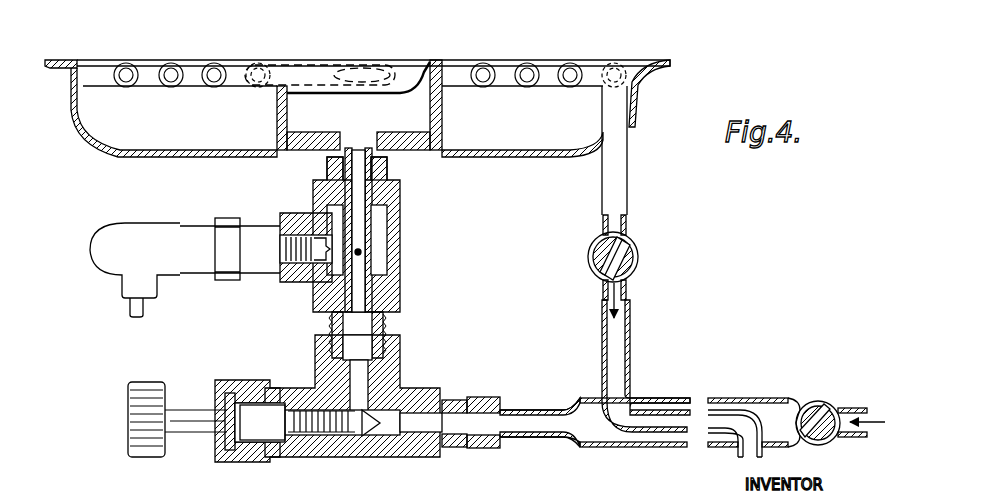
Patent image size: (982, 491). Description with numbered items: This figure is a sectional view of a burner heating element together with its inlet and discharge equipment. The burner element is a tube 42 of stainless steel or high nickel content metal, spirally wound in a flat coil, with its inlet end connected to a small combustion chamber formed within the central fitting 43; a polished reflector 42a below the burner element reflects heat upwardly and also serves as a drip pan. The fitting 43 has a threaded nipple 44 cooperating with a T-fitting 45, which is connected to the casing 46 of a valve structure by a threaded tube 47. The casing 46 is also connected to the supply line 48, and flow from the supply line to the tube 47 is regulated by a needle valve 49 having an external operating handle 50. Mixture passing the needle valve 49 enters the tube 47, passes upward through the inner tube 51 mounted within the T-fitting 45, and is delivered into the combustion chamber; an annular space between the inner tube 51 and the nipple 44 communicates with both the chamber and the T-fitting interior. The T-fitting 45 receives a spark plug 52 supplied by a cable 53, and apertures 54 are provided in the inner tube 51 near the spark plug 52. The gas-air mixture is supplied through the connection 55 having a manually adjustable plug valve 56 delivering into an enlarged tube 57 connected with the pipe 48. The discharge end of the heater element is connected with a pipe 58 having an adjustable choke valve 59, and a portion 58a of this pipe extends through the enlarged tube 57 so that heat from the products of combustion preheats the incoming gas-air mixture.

The tube 42 is at (527, 62).
The polished reflector 42a is at (641, 100).
The central fitting 43 is at (414, 80).
The threaded nipple 44 is at (388, 166).
The T-fitting 45 is at (400, 233).
The casing 46 is at (396, 363).
The threaded tube 47 is at (386, 326).
The supply line 48 is at (535, 437).
The needle valve 49 is at (363, 440).
The external operating handle 50 is at (150, 457).
The inner tube 51 is at (368, 253).
The spark plug 52 is at (258, 226).
The cable 53 is at (142, 309).
The apertures 54 is at (342, 247).
The connection 55 is at (853, 408).
The manually adjustable plug valve 56 is at (807, 402).
The enlarged tube 57 is at (664, 398).
The pipe 58 is at (628, 174).
The portion of pipe 58a is at (676, 427).
The adjustable choke valve 59 is at (639, 256).